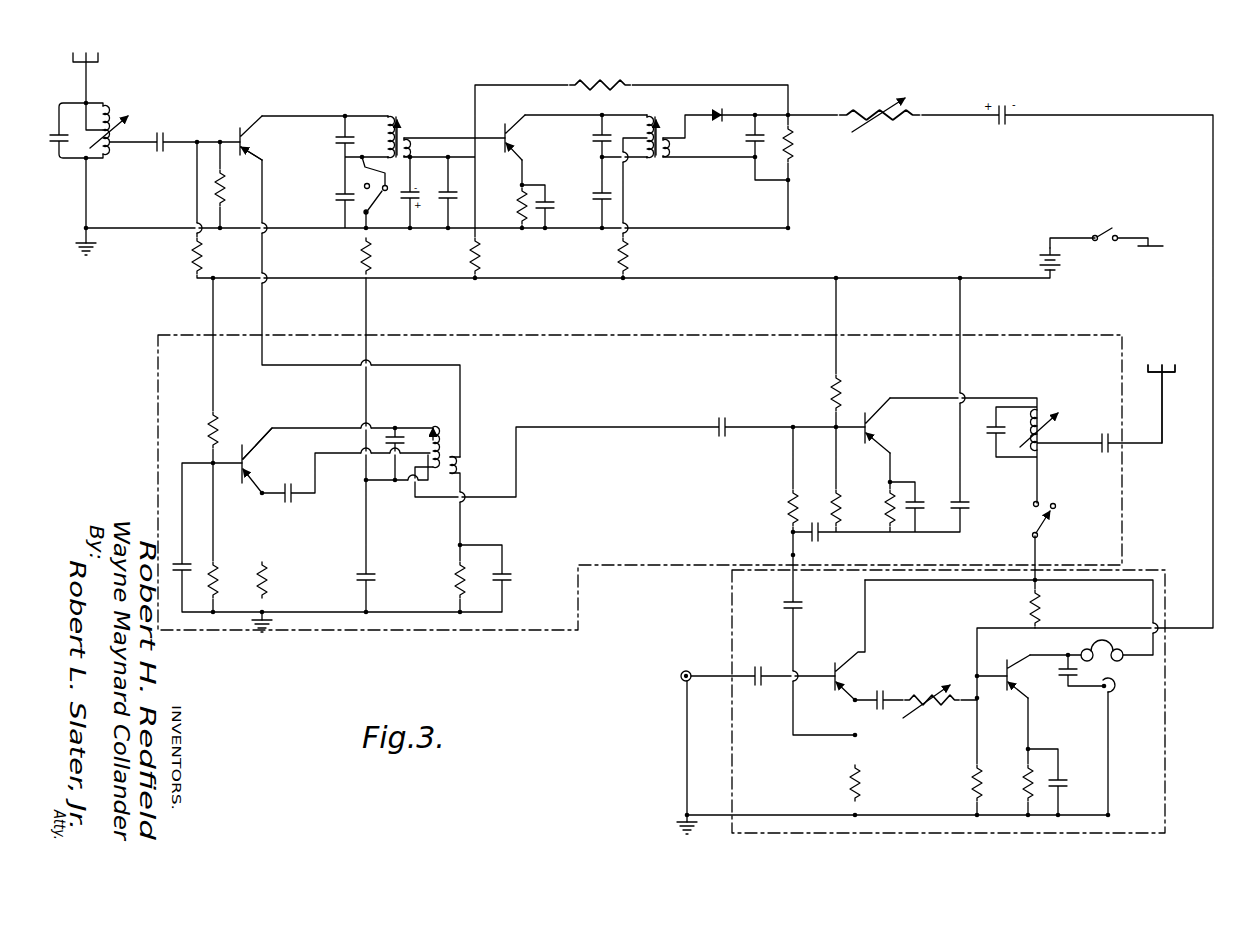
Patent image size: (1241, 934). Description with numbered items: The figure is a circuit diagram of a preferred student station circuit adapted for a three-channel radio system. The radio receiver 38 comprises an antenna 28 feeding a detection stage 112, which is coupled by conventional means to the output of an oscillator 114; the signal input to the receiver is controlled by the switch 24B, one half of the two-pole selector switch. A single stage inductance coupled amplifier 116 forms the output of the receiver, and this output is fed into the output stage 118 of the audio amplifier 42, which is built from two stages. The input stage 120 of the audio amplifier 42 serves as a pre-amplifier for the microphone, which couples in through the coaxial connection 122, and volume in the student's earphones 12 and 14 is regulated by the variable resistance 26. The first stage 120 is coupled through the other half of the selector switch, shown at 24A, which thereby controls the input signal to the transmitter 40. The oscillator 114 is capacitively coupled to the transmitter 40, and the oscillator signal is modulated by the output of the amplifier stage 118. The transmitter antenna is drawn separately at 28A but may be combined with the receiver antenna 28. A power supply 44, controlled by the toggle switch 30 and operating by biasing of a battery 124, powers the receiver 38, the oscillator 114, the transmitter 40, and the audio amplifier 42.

The antenna 28 is at (89, 83).
The detection stage 112 is at (243, 128).
The radio receiver 38 is at (357, 110).
The switch 24B is at (388, 210).
The single stage inductance coupled amplifier 116 is at (575, 116).
The toggle switch 30 is at (1095, 236).
The power supply 44 is at (1160, 215).
The battery 124 is at (1067, 264).
The radio transmitter 40 is at (935, 348).
The oscillator 114 is at (178, 385).
The transmitter antenna 28A is at (1163, 398).
The switch 24A is at (1053, 511).
The coaxial connection 122 is at (689, 665).
The input stage 120 is at (836, 662).
The variable resistance 26 is at (921, 692).
The output stage 118 is at (1010, 664).
The earphone 12 is at (1084, 650).
The earphone 14 is at (1121, 650).
The audio amplifier 42 is at (1148, 736).